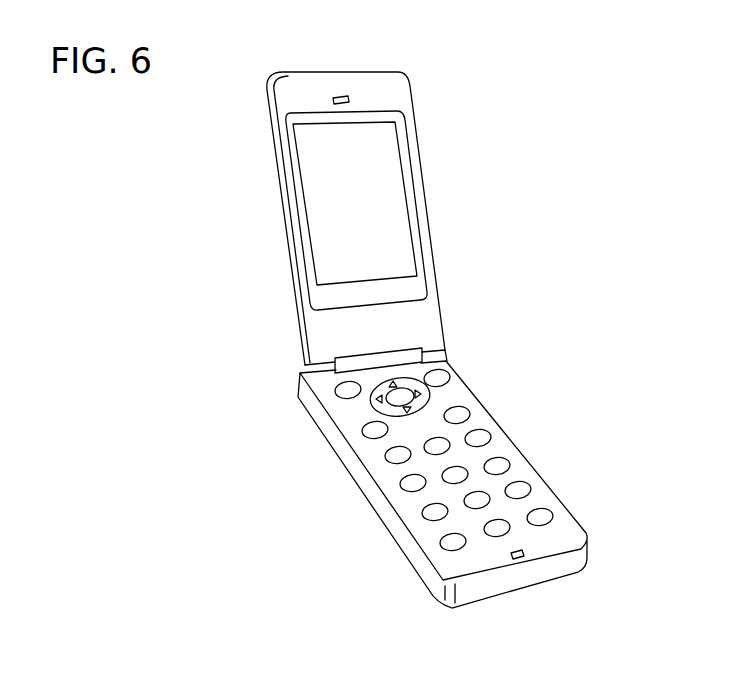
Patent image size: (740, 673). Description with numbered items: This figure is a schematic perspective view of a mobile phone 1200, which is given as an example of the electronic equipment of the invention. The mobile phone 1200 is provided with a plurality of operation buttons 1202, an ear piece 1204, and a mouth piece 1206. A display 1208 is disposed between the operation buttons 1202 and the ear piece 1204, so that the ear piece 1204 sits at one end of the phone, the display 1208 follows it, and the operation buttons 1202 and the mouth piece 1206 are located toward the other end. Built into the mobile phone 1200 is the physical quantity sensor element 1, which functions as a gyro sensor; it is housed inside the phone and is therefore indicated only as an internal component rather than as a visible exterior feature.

The mobile phone 1200 is at (463, 102).
The operation buttons 1202 is at (508, 461).
The ear piece 1204 is at (345, 95).
The mouth piece 1206 is at (527, 557).
The display 1208 is at (384, 198).
The physical quantity sensor element 1 is at (452, 394).